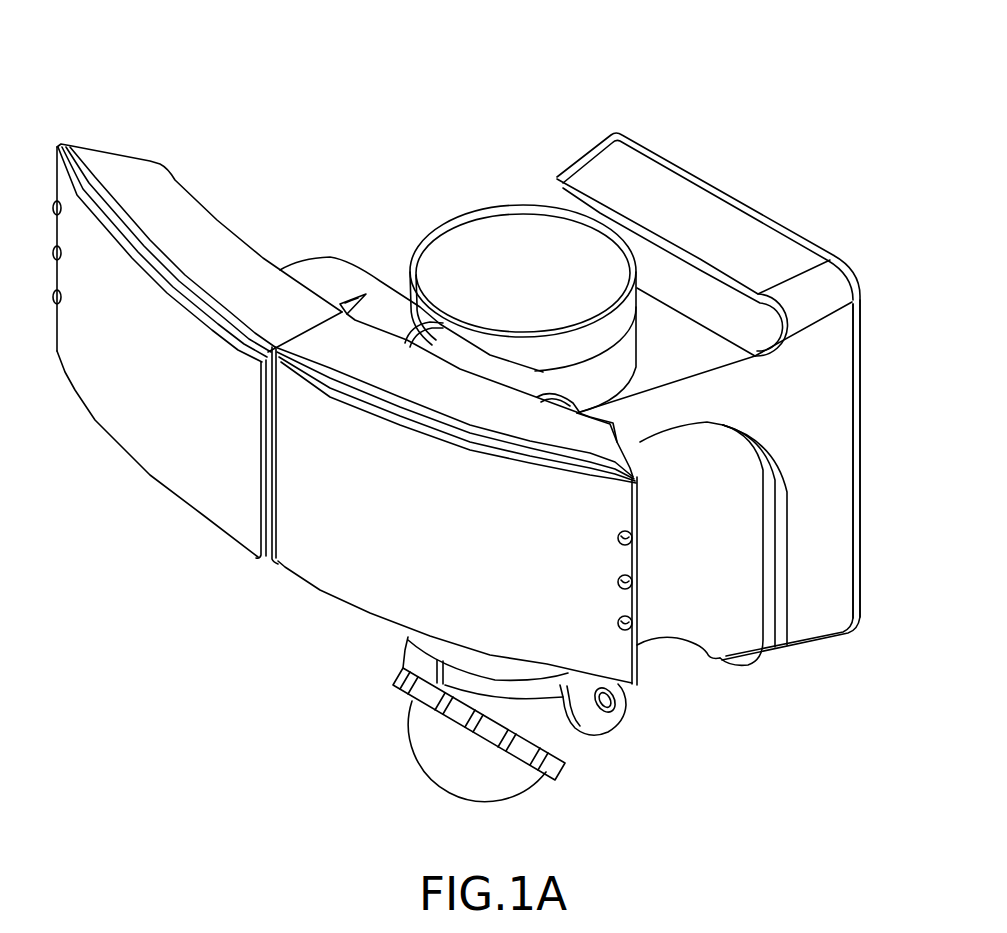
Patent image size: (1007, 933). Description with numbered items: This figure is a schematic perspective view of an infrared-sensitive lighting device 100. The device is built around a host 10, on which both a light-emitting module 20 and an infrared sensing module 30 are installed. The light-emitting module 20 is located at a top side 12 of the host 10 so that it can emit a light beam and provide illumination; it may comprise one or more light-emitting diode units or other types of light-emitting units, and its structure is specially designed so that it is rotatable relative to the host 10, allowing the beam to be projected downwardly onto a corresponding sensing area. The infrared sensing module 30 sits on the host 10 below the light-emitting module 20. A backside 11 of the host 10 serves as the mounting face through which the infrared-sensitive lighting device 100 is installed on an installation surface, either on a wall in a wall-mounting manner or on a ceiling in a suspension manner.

The infrared-sensitive lighting device 100 is at (500, 91).
The host 10 is at (737, 224).
The backside 11 is at (858, 433).
The top side 12 is at (663, 340).
The light-emitting module 20 is at (170, 466).
The infrared sensing module 30 is at (433, 763).